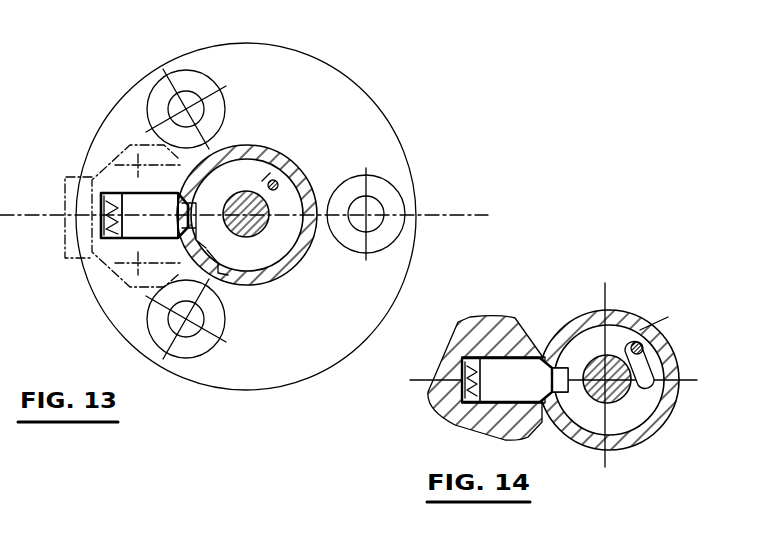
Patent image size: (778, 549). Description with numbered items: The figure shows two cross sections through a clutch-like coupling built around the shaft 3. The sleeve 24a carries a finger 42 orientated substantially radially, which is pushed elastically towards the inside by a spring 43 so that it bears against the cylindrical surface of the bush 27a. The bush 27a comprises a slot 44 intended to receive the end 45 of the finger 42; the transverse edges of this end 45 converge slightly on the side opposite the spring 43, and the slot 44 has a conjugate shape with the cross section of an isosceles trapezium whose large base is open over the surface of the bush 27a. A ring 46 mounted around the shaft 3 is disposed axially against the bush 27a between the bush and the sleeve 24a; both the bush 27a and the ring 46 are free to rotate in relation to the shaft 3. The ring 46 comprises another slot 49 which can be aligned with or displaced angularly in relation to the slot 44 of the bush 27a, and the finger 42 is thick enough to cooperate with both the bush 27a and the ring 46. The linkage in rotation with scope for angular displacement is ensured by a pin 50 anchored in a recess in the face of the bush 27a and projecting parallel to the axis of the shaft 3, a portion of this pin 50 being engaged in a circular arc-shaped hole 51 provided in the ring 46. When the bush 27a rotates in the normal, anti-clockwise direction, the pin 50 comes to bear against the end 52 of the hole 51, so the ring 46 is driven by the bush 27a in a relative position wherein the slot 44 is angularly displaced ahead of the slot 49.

In FIG. 13, the sleeve 24a is at (348, 107).
In FIG. 13, the bush 27a is at (273, 255).
In FIG. 13, the slot 44 is at (217, 258).
In FIG. 13, the pin 50 is at (278, 186).
In FIG. 14, the pin 50 is at (640, 347).
In FIG. 13, the slot 49 is at (144, 286).
In FIG. 14, the slot 49 is at (563, 372).
In FIG. 13, the finger 42 is at (137, 207).
In FIG. 14, the finger 42 is at (515, 367).
In FIG. 13, the spring 43 is at (103, 217).
In FIG. 14, the spring 43 is at (466, 366).
In FIG. 13, the end 45 is at (178, 195).
In FIG. 14, the ring 46 is at (624, 420).
In FIG. 14, the circular arc-shaped hole 51 is at (648, 372).
In FIG. 14, the end 52 is at (628, 338).
In FIG. 14, the shaft 3 is at (597, 357).